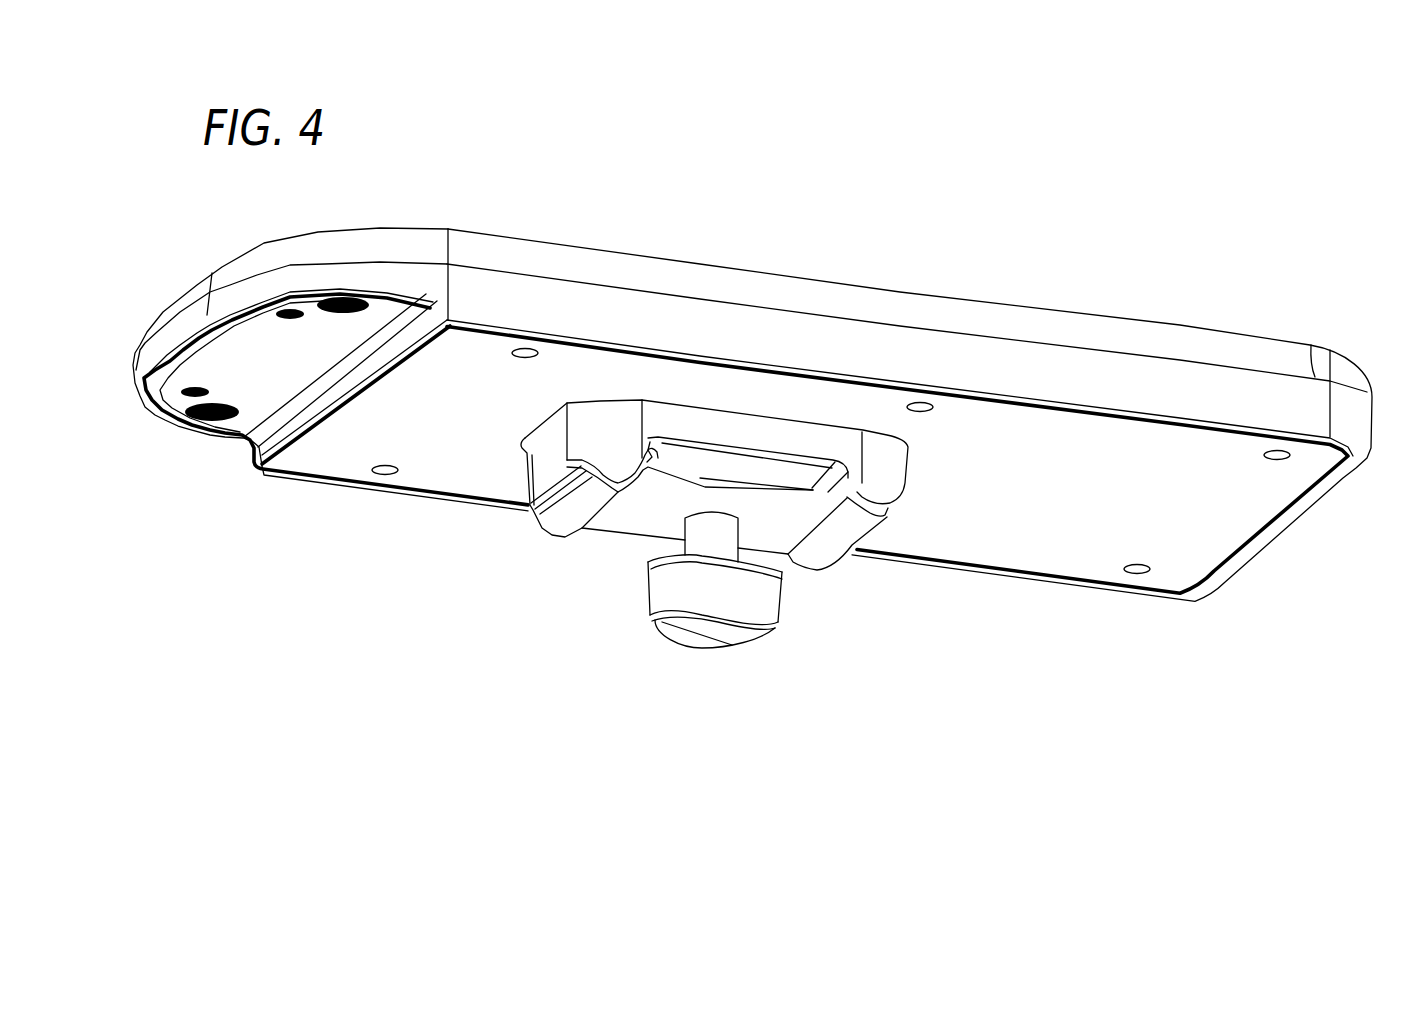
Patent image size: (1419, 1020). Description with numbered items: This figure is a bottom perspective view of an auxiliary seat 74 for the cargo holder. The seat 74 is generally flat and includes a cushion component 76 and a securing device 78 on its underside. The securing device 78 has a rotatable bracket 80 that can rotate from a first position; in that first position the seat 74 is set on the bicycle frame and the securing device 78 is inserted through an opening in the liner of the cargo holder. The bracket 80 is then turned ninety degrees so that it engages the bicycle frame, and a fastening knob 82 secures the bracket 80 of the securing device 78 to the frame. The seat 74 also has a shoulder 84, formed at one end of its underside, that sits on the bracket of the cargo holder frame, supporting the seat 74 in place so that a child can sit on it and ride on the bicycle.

The seat 74 is at (768, 308).
The cushion component 76 is at (981, 324).
The securing device 78 is at (648, 661).
The rotatable bracket 80 is at (842, 532).
The fastening knob 82 is at (732, 630).
The shoulder 84 is at (257, 363).